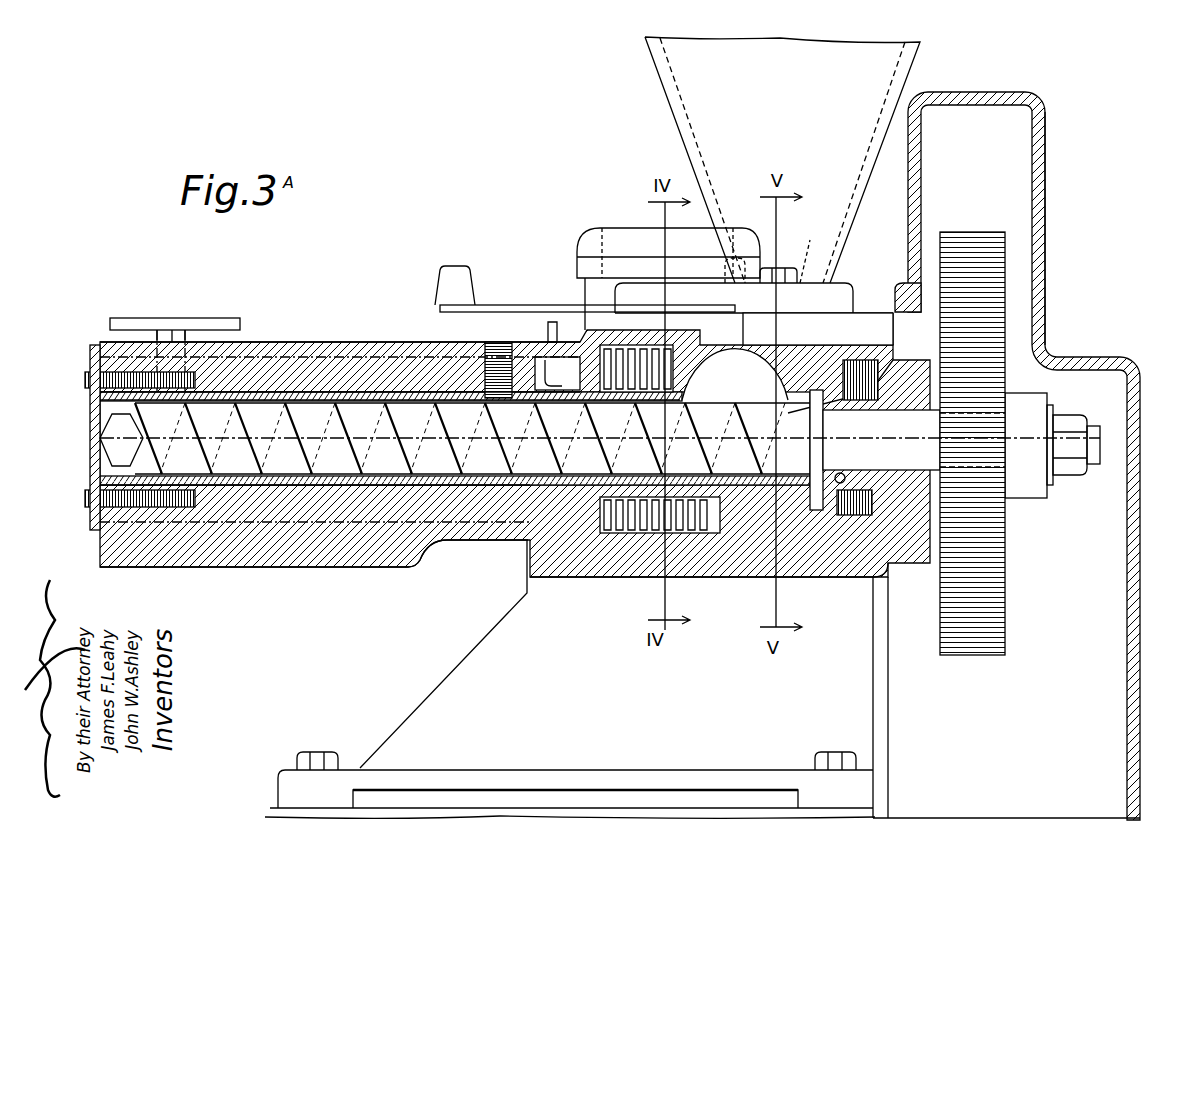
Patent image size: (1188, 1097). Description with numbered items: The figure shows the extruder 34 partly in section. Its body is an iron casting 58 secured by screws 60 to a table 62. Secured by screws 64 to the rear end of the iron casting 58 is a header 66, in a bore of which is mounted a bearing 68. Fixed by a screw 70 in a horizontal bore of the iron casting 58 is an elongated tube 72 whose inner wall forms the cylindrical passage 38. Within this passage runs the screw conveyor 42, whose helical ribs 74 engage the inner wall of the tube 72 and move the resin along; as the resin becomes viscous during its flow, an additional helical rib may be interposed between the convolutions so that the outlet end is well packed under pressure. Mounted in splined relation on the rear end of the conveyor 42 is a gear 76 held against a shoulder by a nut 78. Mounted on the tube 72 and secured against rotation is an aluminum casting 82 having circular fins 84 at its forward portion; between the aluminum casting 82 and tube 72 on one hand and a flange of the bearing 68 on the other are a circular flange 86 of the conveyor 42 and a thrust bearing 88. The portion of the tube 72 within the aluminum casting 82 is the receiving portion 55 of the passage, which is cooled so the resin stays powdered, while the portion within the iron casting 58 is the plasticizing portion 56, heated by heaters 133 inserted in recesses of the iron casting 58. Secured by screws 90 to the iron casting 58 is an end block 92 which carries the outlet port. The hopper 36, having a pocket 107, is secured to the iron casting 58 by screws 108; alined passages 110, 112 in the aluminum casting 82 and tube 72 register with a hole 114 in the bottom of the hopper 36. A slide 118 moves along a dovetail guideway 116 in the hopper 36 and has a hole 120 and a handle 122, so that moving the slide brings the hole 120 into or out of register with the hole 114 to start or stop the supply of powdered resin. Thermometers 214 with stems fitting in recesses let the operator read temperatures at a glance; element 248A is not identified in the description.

The extruder 34 is at (352, 293).
The hopper 36 is at (690, 158).
The passage 38 is at (410, 392).
The screw conveyor 42 is at (450, 420).
The receiving portion 55 is at (642, 533).
The plasticizing portion 56 is at (398, 567).
The iron casting 58 is at (358, 342).
The screws 60 is at (318, 752).
The table 62 is at (548, 790).
The screws 64 is at (930, 355).
The header 66 is at (923, 328).
The bearing 68 is at (933, 407).
The screw 70 is at (498, 342).
The elongated tube 72 is at (291, 400).
The helical ribs 74 is at (503, 447).
The gear 76 is at (1006, 573).
The nut 78 is at (1078, 418).
The aluminum casting 82 is at (860, 313).
The circular fins 84 is at (655, 345).
The circular flange 86 is at (843, 470).
The thrust bearing 88 is at (832, 492).
The screws 90 is at (80, 528).
The end block 92 is at (92, 350).
The pocket 107 is at (715, 112).
The screws 108 is at (780, 277).
The passage 110 is at (812, 392).
The passage 112 is at (830, 436).
The hole 114 is at (742, 262).
The dovetail guideway 116 is at (780, 262).
The slide 118 is at (532, 305).
The hole 120 is at (800, 282).
The handle 122 is at (452, 266).
The heaters 133 is at (393, 348).
The thermometers 214 is at (218, 318).
The channel 248A is at (277, 567).